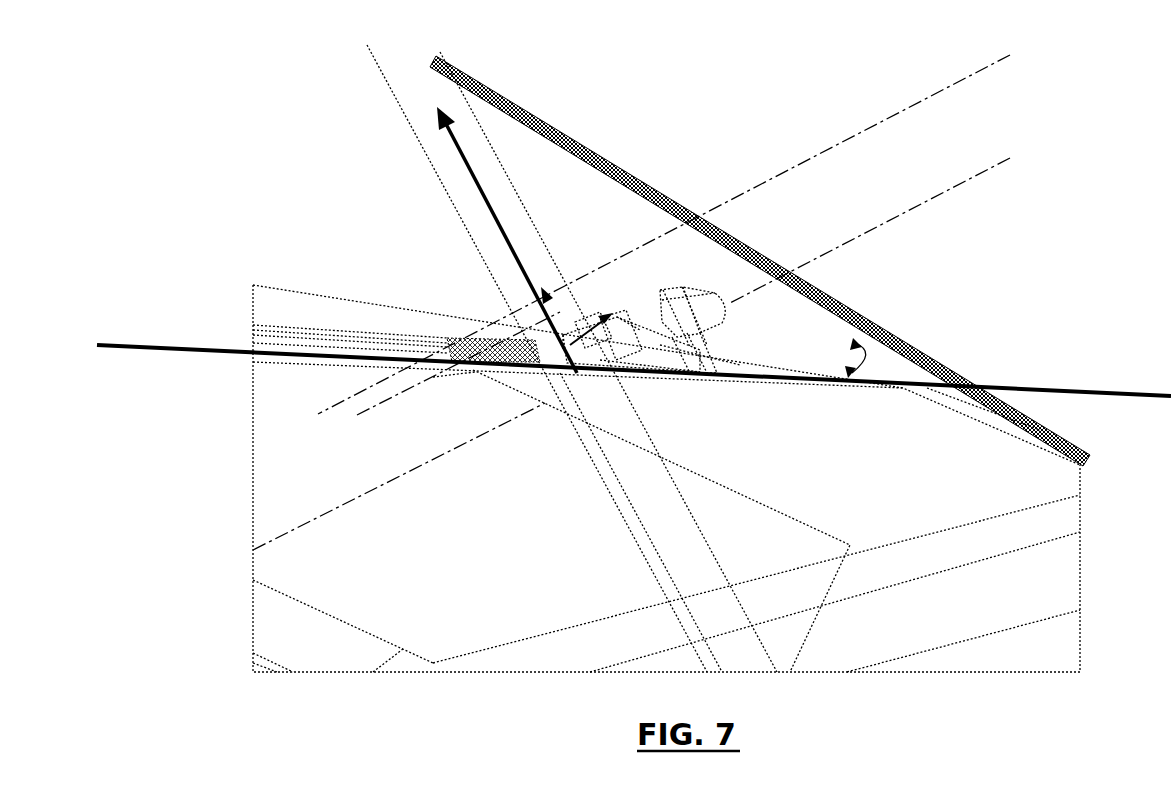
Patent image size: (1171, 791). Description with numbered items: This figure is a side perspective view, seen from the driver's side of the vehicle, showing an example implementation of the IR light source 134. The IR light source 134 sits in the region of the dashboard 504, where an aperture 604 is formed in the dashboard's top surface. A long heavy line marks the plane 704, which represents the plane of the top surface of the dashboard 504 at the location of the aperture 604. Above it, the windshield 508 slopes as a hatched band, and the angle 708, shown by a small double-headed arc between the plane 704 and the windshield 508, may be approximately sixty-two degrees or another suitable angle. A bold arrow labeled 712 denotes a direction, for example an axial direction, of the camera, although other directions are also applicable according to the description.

The IR light source 134 is at (660, 320).
The dashboard 504 is at (290, 330).
The windshield 508 is at (585, 155).
The aperture 604 is at (460, 338).
The plane of the top surface of the dashboard 704 is at (178, 346).
The angle 708 is at (870, 353).
The direction of the camera 712 is at (478, 188).